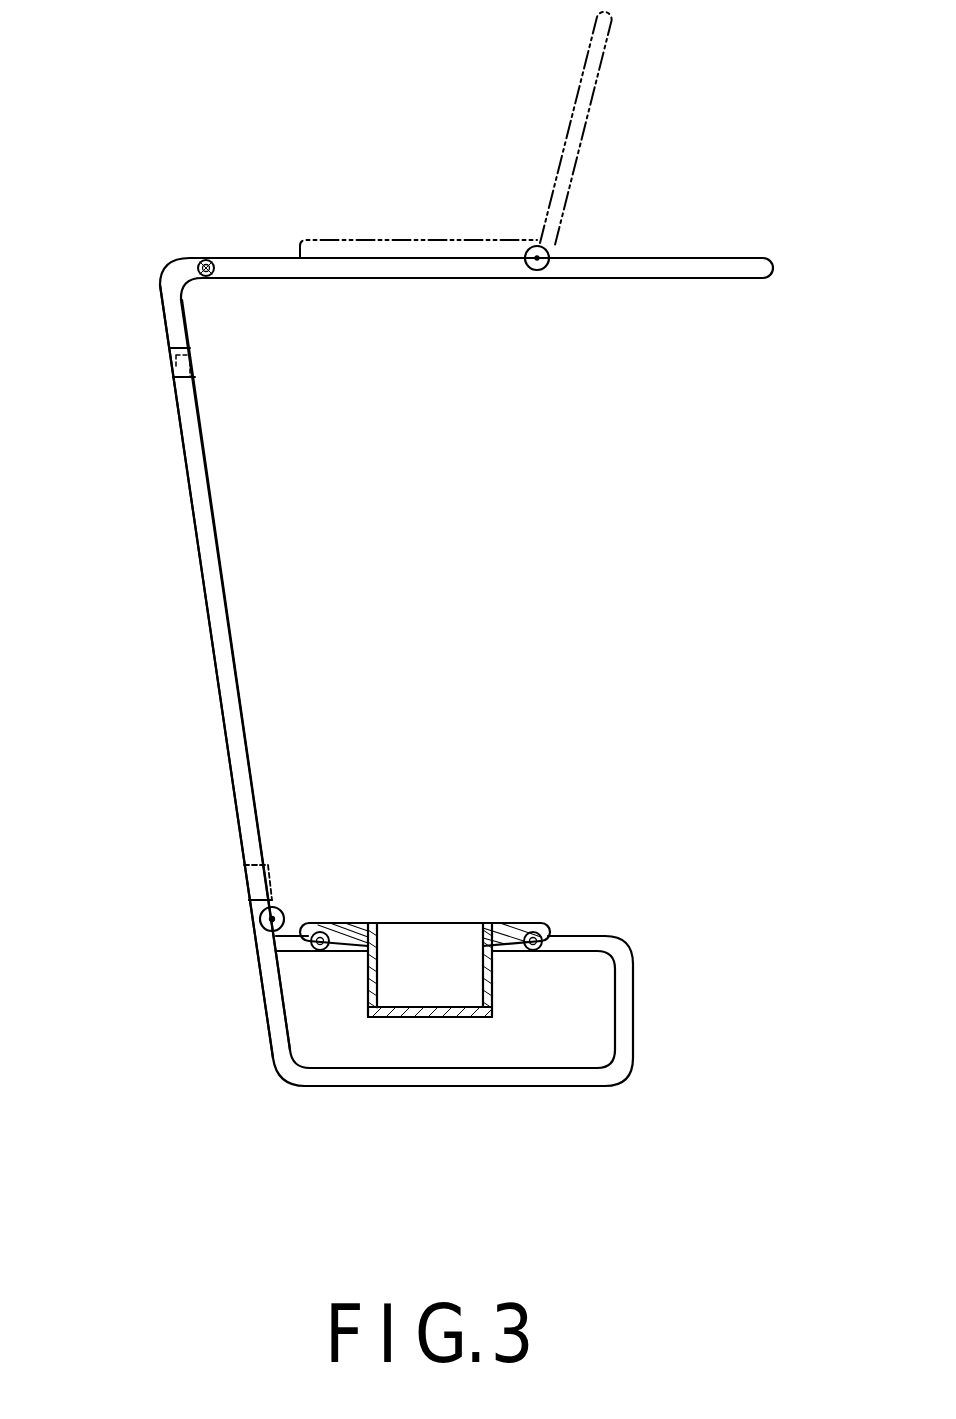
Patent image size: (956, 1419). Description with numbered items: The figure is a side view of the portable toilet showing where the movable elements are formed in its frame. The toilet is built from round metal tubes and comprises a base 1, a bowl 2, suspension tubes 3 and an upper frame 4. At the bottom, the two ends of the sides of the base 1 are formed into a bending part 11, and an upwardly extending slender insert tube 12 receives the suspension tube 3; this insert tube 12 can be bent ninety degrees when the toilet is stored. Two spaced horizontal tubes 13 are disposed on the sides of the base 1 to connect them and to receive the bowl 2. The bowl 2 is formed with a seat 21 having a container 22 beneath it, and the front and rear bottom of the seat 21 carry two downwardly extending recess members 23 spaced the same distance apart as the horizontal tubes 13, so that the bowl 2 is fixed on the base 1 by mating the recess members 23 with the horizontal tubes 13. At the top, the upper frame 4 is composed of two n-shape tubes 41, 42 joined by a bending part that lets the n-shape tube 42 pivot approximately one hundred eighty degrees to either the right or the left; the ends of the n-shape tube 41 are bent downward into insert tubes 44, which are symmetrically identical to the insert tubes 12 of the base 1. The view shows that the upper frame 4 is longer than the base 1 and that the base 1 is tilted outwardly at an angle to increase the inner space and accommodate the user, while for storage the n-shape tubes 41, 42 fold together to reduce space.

The base 1 is at (656, 908).
The bowl 2 is at (480, 890).
The suspension tube 3 is at (198, 565).
The upper frame 4 is at (255, 235).
The bending part 11 is at (270, 926).
The insert tube 12 is at (243, 878).
The horizontal tube 13 is at (320, 952).
The seat 21 is at (515, 925).
The container 22 is at (495, 1005).
The recess member 23 is at (552, 934).
The n-shape tube 41 is at (380, 279).
The n-shape tube 42 is at (575, 100).
The insert tube 44 is at (176, 369).